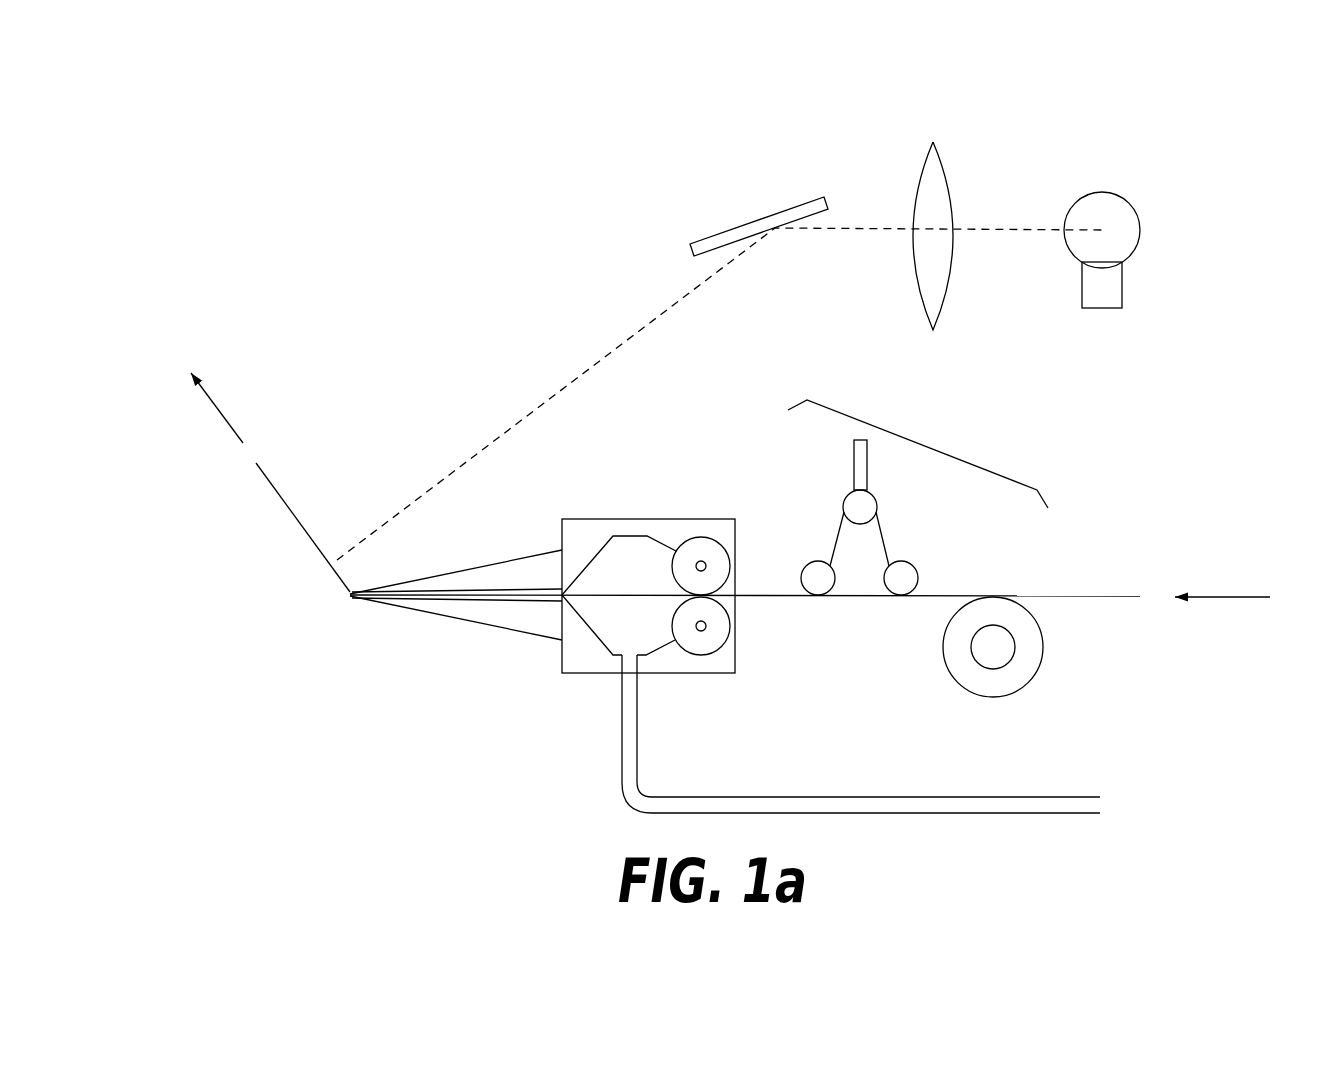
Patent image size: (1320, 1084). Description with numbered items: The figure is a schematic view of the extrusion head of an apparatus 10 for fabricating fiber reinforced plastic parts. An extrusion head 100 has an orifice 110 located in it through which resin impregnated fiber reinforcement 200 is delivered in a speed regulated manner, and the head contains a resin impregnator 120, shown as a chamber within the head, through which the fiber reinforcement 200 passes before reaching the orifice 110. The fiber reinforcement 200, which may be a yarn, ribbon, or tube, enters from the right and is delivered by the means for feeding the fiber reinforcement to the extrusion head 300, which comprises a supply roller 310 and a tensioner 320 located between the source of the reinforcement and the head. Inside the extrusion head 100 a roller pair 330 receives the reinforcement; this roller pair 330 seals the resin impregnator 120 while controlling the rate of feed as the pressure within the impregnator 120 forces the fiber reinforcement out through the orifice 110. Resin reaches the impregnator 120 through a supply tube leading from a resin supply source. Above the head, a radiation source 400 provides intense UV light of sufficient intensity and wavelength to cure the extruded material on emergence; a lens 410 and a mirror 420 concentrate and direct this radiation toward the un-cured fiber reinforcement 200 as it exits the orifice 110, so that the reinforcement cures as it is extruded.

The apparatus 10 is at (187, 228).
The extrusion head 100 is at (612, 682).
The orifice 110 is at (345, 600).
The resin impregnator 120 is at (603, 625).
The fiber reinforcement 200 is at (1105, 600).
The means for feeding the fiber reinforcement to the extrusion head 300 is at (920, 446).
The supply roller 310 is at (1042, 666).
The tensioner 320 is at (883, 523).
The roller pair 330 is at (690, 622).
The radiation source 400 is at (1145, 225).
The lens 410 is at (948, 170).
The mirror 420 is at (795, 205).